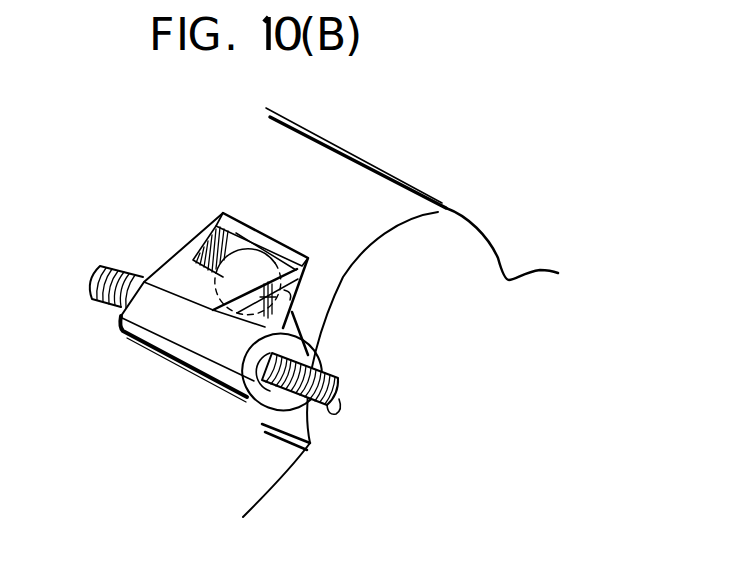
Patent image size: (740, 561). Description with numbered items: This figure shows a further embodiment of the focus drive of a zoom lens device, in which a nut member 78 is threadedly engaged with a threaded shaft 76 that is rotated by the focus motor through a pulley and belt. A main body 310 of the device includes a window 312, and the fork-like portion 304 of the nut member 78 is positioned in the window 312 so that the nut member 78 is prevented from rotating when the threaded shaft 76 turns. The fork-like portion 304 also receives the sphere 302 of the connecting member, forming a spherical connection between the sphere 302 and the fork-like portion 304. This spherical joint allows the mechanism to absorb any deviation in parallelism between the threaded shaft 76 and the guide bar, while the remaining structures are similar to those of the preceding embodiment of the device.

The sphere 302 is at (236, 263).
The main body 310 is at (353, 187).
The window 312 is at (275, 295).
The nut member 78 is at (184, 362).
The fork-like portion 304 is at (218, 382).
The threaded shaft 76 is at (310, 443).